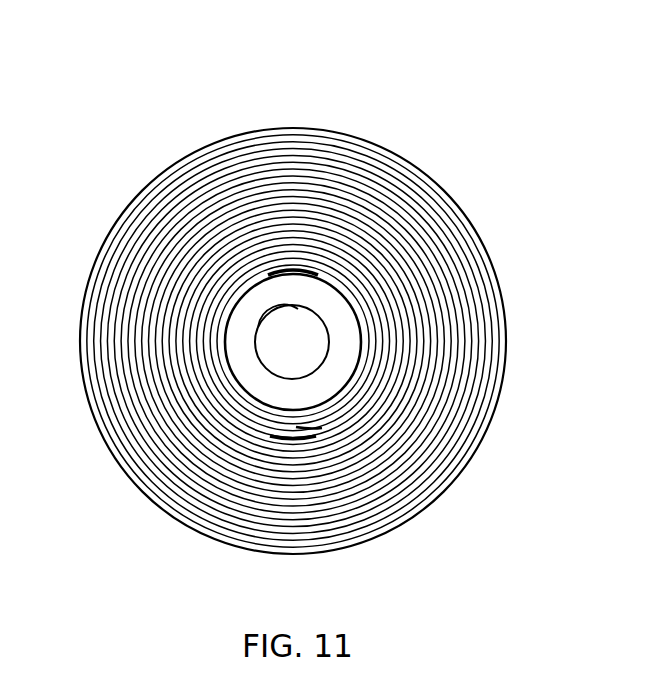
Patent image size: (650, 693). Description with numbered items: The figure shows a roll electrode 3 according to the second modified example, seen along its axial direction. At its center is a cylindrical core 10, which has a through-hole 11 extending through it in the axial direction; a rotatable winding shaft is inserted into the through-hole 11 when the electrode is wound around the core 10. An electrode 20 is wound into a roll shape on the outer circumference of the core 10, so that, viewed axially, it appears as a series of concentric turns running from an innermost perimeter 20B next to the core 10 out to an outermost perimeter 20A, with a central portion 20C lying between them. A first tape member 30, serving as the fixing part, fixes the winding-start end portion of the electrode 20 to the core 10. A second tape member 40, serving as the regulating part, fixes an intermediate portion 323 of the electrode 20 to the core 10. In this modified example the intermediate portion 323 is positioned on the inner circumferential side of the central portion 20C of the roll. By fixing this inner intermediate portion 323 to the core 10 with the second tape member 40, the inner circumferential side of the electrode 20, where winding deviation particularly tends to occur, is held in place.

The roll electrode 3 is at (68, 66).
The core 10 is at (350, 348).
The through-hole 11 is at (258, 327).
The electrode 20 is at (492, 282).
The outermost perimeter 20A is at (412, 167).
The innermost perimeter 20B is at (368, 313).
The central portion 20C is at (377, 223).
The first tape member 30 is at (295, 274).
The second tape member 40 is at (293, 410).
The intermediate portion 323 is at (304, 432).